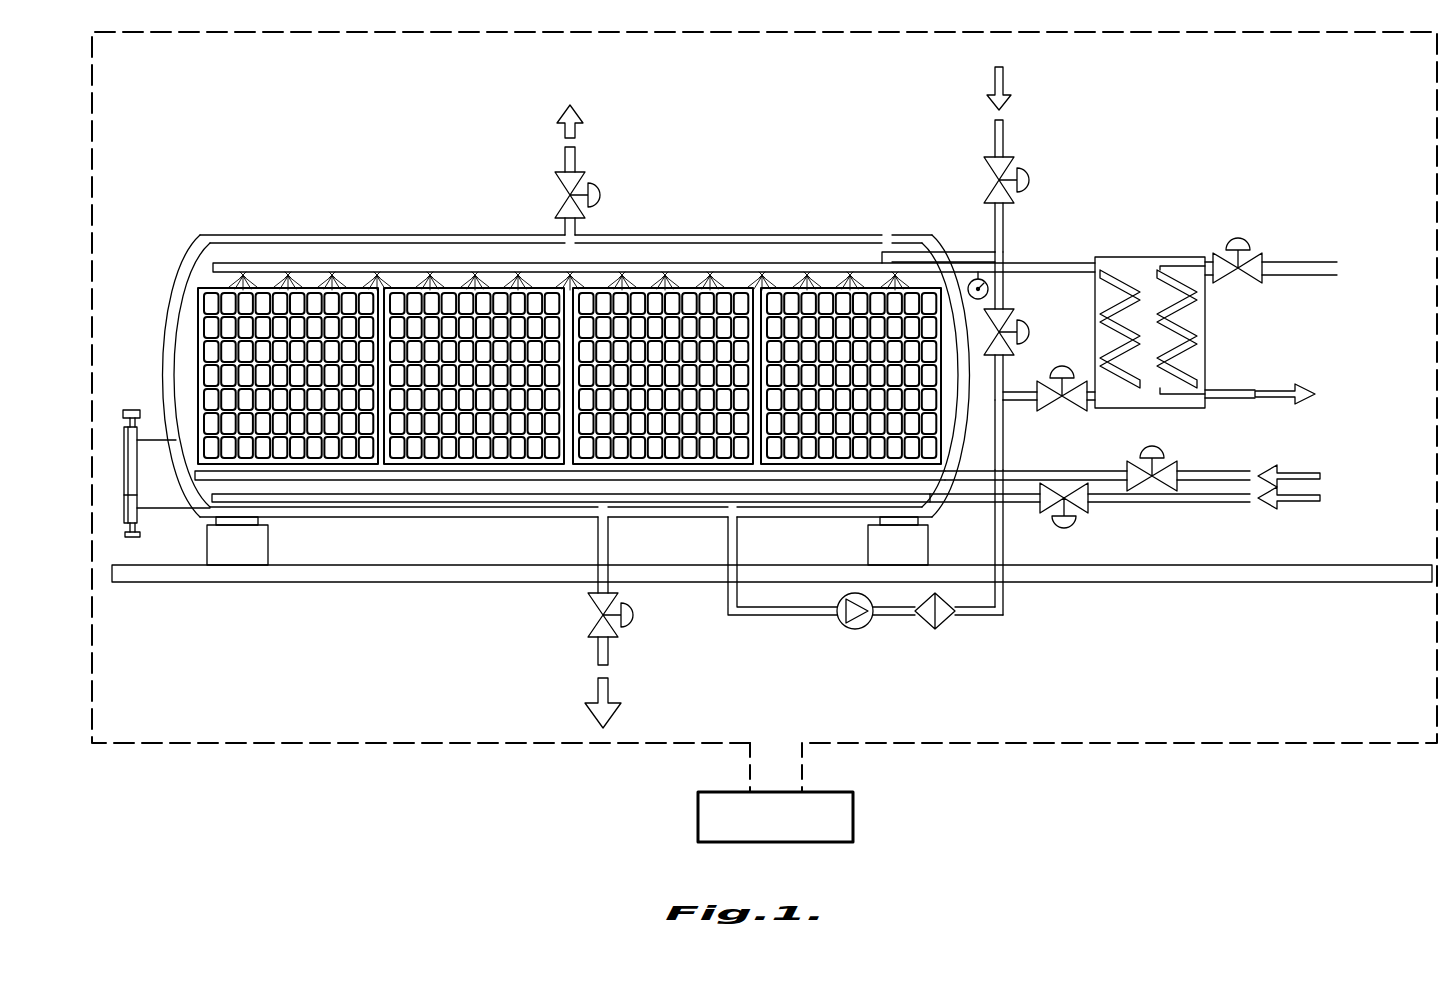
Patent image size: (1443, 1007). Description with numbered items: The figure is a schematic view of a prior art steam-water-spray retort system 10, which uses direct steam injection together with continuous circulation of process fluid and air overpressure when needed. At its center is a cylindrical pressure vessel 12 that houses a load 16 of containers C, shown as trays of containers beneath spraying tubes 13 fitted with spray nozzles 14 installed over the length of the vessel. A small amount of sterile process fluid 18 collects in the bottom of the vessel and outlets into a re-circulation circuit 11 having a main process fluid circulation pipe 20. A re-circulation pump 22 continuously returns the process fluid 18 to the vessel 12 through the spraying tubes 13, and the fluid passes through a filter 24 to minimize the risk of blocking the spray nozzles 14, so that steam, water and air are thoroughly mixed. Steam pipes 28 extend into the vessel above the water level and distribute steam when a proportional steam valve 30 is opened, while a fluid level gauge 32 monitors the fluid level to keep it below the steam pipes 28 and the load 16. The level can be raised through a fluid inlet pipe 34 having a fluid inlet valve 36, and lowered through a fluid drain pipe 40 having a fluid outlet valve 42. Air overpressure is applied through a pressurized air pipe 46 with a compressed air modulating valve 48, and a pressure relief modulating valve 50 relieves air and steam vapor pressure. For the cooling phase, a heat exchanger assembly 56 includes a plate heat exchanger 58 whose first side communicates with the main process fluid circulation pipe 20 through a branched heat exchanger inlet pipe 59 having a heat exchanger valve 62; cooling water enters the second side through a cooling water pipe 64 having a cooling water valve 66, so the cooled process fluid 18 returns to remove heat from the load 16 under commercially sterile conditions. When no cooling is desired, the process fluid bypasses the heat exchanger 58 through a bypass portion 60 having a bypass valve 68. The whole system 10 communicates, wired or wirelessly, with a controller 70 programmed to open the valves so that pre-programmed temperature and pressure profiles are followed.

The steam-water-spray retort system 10 is at (1168, 108).
The re-circulation circuit 11 is at (1052, 595).
The cylindrical pressure vessel 12 is at (200, 236).
The spraying tubes 13 is at (757, 262).
The spray nozzles 14 is at (665, 270).
The load 16 is at (531, 384).
The containers C is at (210, 352).
The process fluid 18 is at (390, 500).
The main process fluid circulation pipe 20 is at (1003, 612).
The re-circulation pump 22 is at (860, 630).
The filter 24 is at (940, 629).
The steam pipes 28 is at (1056, 472).
The proportional steam valve 30 is at (1180, 470).
The fluid level gauge 32 is at (140, 536).
The fluid inlet pipe 34 is at (1213, 503).
The fluid inlet valve 36 is at (1090, 506).
The fluid drain pipe 40 is at (609, 545).
The fluid outlet valve 42 is at (619, 636).
The pressurized air pipe 46 is at (1004, 134).
The compressed air modulating valve 48 is at (1013, 200).
The pressure relief modulating valve 50 is at (576, 166).
The heat exchanger assembly 56 is at (1175, 228).
The plate heat exchanger 58 is at (1205, 299).
The heat exchanger inlet pipe 59 is at (1007, 398).
The bypass portion 60 is at (1008, 286).
The heat exchanger valve 62 is at (1050, 403).
The cooling water pipe 64 is at (1312, 262).
The cooling water valve 66 is at (1260, 256).
The bypass valve 68 is at (1011, 350).
The controller 70 is at (853, 814).